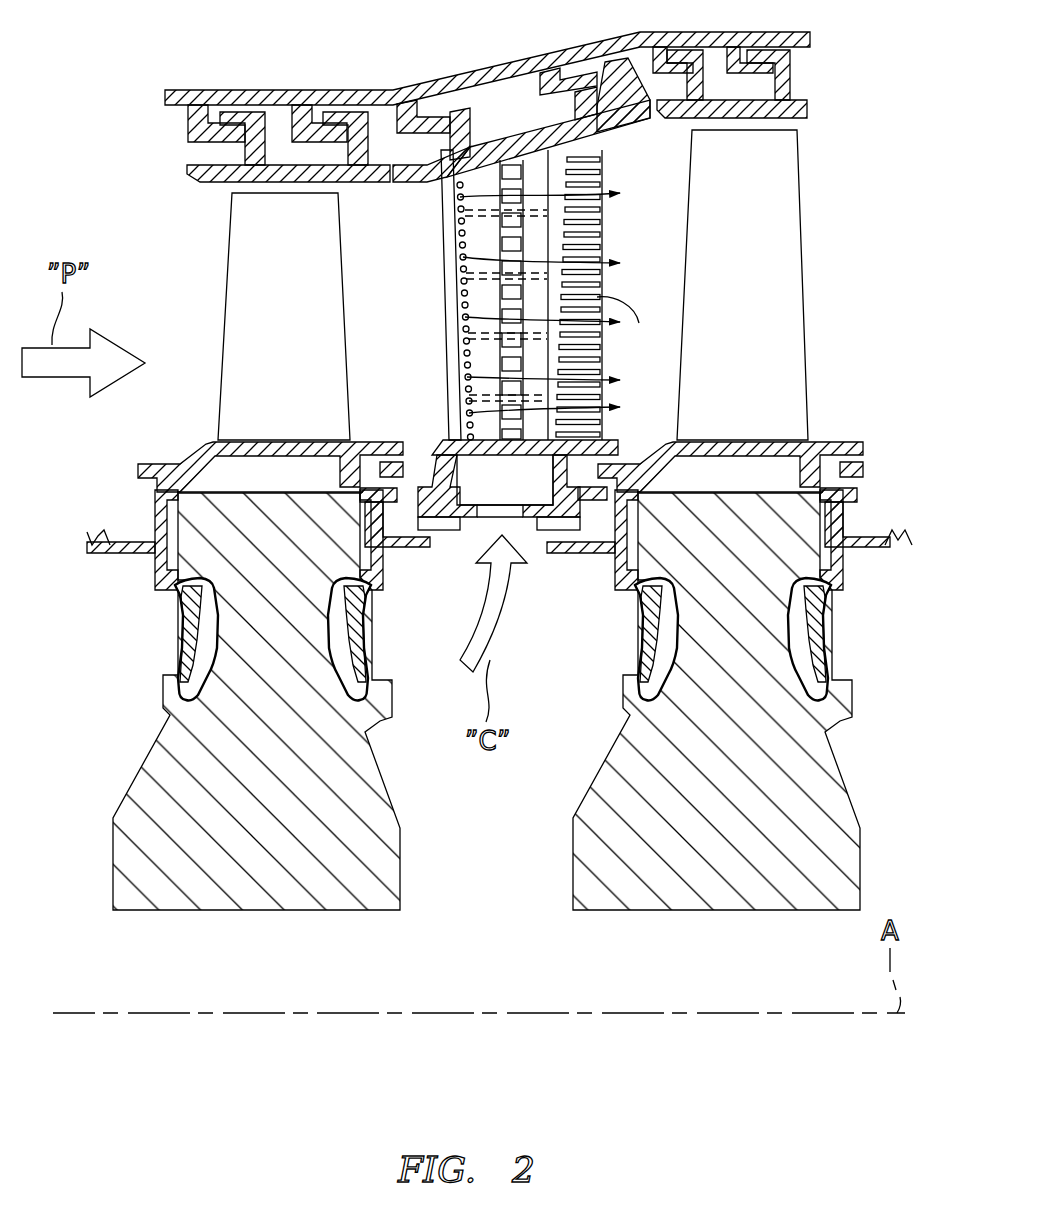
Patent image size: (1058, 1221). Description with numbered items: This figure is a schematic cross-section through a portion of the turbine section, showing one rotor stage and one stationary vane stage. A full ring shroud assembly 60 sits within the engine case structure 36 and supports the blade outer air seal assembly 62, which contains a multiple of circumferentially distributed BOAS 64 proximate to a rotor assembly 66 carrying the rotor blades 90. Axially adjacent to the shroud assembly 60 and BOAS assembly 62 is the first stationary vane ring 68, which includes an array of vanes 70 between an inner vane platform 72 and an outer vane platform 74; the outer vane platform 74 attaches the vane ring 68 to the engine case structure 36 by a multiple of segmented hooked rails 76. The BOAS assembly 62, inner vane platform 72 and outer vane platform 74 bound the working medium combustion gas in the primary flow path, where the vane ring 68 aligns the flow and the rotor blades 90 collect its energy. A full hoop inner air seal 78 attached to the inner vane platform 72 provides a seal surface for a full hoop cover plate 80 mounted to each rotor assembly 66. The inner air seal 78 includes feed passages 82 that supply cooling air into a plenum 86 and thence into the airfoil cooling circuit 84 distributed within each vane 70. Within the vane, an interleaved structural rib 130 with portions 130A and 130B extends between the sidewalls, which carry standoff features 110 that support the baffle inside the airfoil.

The engine case structure 36 is at (812, 38).
The full ring shroud assembly 60 is at (281, 138).
The blade outer air seal (BOAS) assembly 62 is at (176, 143).
The BOAS 64 is at (190, 175).
The rotor assembly 66 is at (276, 834).
The first stationary vane ring 68 is at (428, 248).
The vanes 70 is at (441, 305).
The inner vane platform 72 is at (438, 453).
The outer vane platform 74 is at (428, 153).
The segmented hooked rails 76 is at (470, 157).
The full hoop inner air seal 78 is at (440, 521).
The full hoop cover plate 80 is at (358, 625).
The feed passages 82 is at (508, 513).
The airfoil cooling circuit 84 is at (490, 357).
The plenum 86 is at (493, 482).
The rotor blades 90 is at (305, 342).
The standoff features 110 is at (565, 222).
The interleaved structural rib 130 is at (512, 167).
The first cooling channel 130A is at (510, 298).
The second cooling channel 130B is at (508, 243).